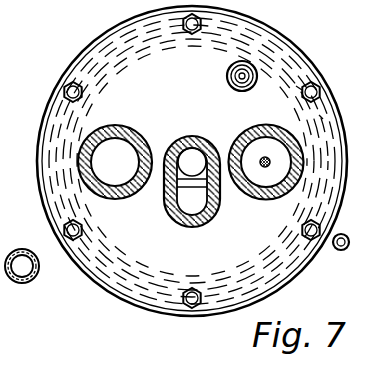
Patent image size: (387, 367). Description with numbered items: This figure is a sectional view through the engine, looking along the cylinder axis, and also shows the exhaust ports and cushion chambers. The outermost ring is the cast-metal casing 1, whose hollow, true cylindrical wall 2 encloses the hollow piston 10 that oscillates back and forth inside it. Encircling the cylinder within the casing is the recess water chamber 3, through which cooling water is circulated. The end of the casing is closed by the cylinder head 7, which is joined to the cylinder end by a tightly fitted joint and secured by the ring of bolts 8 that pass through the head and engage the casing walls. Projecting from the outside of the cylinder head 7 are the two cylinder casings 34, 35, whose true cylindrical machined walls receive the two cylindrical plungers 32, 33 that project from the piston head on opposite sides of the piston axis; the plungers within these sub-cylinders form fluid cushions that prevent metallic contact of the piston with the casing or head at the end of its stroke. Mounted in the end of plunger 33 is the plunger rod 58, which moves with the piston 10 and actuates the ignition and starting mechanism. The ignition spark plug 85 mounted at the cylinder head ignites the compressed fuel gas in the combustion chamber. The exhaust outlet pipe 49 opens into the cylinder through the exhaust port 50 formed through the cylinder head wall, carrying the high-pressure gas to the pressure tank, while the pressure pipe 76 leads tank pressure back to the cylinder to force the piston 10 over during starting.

The casing 1 is at (327, 98).
The cylindrical wall 2 is at (296, 90).
The recess water chamber 3 is at (321, 118).
The cylinder head 7 is at (347, 148).
The bolts 8 is at (312, 222).
The piston 10 is at (88, 117).
The cylindrical plunger 32 is at (104, 162).
The cylindrical plunger 33 is at (277, 170).
The projecting cylinder casing 34 is at (90, 136).
The projecting cylinder casing 35 is at (300, 185).
The exhaust outlet pipe 49 is at (37, 276).
The exhaust port 50 is at (195, 153).
The plunger rod 58 is at (271, 160).
The pressure pipe 76 is at (346, 238).
The ignition spark plug 85 is at (294, 0).